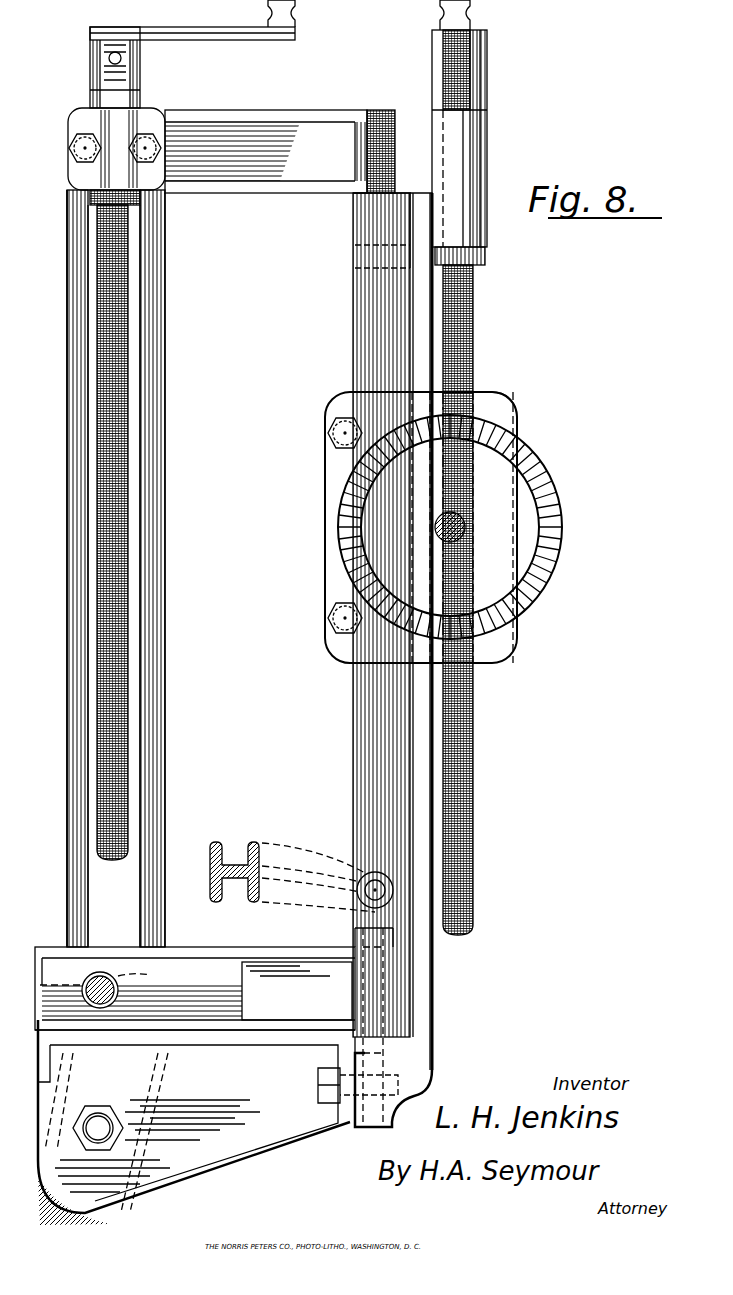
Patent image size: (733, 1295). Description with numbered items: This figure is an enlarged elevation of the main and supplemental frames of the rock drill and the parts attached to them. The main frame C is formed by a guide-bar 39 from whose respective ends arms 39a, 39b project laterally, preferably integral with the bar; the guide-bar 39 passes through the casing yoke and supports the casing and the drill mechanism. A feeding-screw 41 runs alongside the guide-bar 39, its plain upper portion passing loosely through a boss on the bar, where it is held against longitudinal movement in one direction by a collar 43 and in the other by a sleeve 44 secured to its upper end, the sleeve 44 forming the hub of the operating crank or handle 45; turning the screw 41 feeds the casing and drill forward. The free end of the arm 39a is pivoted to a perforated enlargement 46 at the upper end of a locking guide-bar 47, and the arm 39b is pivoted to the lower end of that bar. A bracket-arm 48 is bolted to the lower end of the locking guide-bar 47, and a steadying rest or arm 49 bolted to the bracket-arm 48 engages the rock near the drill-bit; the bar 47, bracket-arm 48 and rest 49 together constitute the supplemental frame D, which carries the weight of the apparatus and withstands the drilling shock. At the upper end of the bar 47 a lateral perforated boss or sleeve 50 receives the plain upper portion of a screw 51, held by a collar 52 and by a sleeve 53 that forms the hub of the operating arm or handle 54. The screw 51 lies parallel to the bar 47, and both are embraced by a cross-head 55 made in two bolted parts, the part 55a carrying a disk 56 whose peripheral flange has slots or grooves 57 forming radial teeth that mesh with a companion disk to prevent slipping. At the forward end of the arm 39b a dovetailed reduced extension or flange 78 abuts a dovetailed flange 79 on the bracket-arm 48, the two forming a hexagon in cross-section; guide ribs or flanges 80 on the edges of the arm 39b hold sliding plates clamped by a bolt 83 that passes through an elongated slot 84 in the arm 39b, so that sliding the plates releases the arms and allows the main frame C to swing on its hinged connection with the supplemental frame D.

The guide-bar 39 is at (78, 276).
The arm 39a is at (280, 151).
The arm 39b is at (234, 905).
The feeding-screw 41 is at (130, 329).
The collar 43 is at (90, 197).
The sleeve 44 is at (90, 76).
The operating crank or handle 45 is at (192, 20).
The perforated enlargement 46 is at (360, 226).
The locking guide-bar 47 is at (358, 338).
The bracket-arm 48 is at (218, 1116).
The steadying rest or arm 49 is at (45, 1206).
The perforated boss or sleeve 50 is at (471, 138).
The screw 51 is at (474, 330).
The collar 52 is at (487, 260).
The sleeve 53 is at (487, 82).
The operating arm or handle 54 is at (468, 15).
The cross-head 55 is at (518, 430).
The cross-head part 55a is at (505, 400).
The disk 56 is at (540, 508).
The slots or grooves 57 is at (463, 525).
The reduced extension or flange 78 is at (38, 956).
The dovetailed flange 79 is at (42, 1027).
The guide ribs or flanges 80 is at (288, 1031).
The bolt 83 is at (100, 976).
The elongated slot 84 is at (150, 989).
The main frame C is at (54, 568).
The supplemental frame D is at (404, 1055).